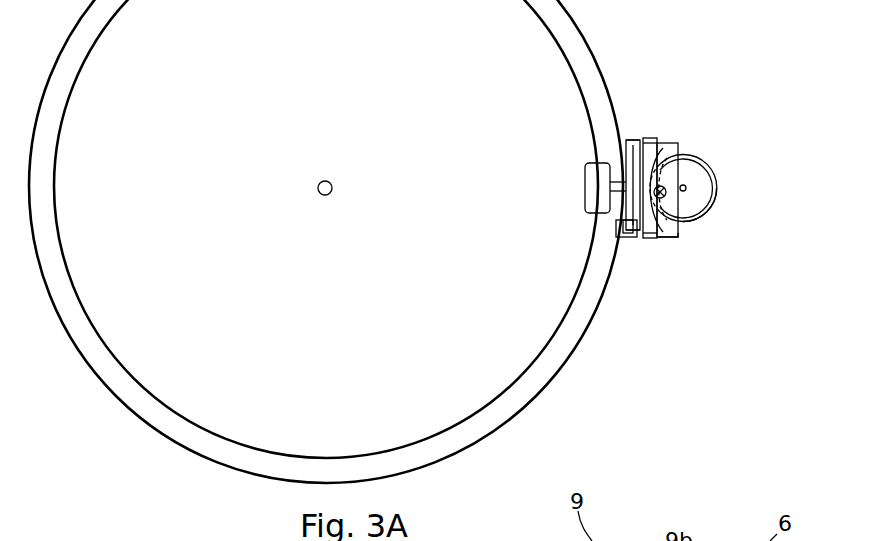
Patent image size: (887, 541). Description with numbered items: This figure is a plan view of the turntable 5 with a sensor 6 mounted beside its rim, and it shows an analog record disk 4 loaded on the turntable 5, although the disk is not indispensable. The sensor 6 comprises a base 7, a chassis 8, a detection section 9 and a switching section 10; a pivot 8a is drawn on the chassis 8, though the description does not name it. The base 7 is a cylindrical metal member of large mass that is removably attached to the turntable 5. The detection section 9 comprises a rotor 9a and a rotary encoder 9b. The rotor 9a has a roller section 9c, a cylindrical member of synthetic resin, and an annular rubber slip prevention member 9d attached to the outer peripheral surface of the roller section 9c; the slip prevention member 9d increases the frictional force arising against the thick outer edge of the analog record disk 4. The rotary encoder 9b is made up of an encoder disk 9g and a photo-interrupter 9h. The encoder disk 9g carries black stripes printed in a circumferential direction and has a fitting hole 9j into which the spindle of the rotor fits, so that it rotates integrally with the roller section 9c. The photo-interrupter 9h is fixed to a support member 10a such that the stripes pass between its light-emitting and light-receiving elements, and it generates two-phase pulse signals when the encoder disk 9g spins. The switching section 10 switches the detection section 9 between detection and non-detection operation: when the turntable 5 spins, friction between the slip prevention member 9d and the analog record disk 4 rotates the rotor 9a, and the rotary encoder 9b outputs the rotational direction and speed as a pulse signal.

The analog record disk 4 is at (510, 338).
The turntable 5 is at (507, 402).
The sensor 6 is at (682, 235).
The base 7 is at (715, 208).
The chassis 8 is at (688, 188).
The roller shaft 8a is at (668, 182).
The detection section 9 is at (606, 138).
The rotor 9a is at (577, 202).
The rotary encoder 9b is at (638, 243).
The roller section 9c is at (585, 180).
The slip prevention member 9d is at (583, 167).
The encoder disk 9g is at (626, 162).
The photo-interrupter 9h is at (620, 237).
The fitting hole 9j is at (595, 217).
The switching section 10 is at (653, 115).
The support member 10a is at (656, 142).